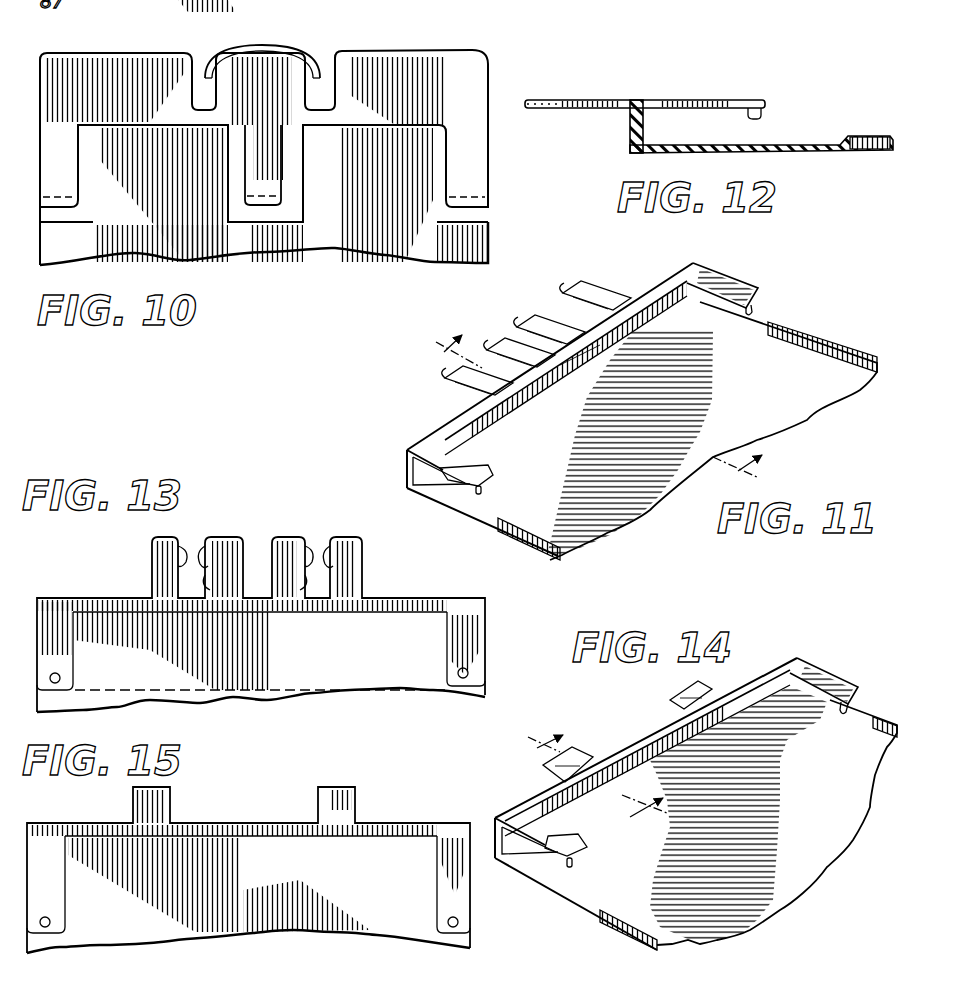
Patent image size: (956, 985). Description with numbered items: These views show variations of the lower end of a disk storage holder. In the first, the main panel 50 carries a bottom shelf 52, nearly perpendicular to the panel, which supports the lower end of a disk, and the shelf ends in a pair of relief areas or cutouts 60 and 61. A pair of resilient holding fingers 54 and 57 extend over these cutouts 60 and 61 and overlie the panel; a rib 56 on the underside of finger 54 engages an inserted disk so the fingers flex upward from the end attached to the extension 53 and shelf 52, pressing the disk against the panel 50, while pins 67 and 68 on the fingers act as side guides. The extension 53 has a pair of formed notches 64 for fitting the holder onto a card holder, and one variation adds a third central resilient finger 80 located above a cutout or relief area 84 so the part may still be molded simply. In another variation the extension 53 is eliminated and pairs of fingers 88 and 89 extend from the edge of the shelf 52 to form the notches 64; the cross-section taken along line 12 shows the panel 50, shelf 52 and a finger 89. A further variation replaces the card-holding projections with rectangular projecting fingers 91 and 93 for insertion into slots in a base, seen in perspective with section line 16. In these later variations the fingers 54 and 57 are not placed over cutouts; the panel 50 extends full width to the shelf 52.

In FIG. 12, the main panel 50 is at (806, 152).
In FIG. 11, the main panel 50 is at (641, 503).
In FIG. 13, the main panel 50 is at (318, 677).
In FIG. 15, the main panel 50 is at (246, 926).
In FIG. 14, the main panel 50 is at (818, 858).
In FIG. 12, the shelf 52 is at (645, 136).
In FIG. 11, the shelf 52 is at (648, 305).
In FIG. 15, the shelf 52 is at (333, 838).
In FIG. 14, the shelf 52 is at (712, 736).
In FIG. 10, the extension 53 is at (444, 72).
In FIG. 10, the resilient holding finger 54 is at (478, 172).
In FIG. 12, the resilient holding finger 54 is at (735, 99).
In FIG. 11, the resilient holding finger 54 is at (737, 286).
In FIG. 13, the resilient holding finger 54 is at (473, 651).
In FIG. 15, the resilient holding finger 54 is at (458, 905).
In FIG. 14, the resilient holding finger 54 is at (835, 688).
In FIG. 12, the cam surface or rib 56 is at (762, 112).
In FIG. 10, the resilient holding finger 57 is at (48, 172).
In FIG. 11, the resilient holding finger 57 is at (482, 462).
In FIG. 13, the resilient holding finger 57 is at (40, 633).
In FIG. 15, the resilient holding finger 57 is at (62, 915).
In FIG. 14, the resilient holding finger 57 is at (588, 844).
In FIG. 10, the relief area or cutout 60 is at (486, 220).
In FIG. 11, the relief area or cutout 60 is at (552, 552).
In FIG. 10, the relief area or cutout 61 is at (72, 214).
In FIG. 11, the relief area or cutout 61 is at (834, 328).
In FIG. 14, the relief area or cutout 61 is at (885, 727).
In FIG. 10, the notches 64 is at (206, 62).
In FIG. 11, the notches 64 is at (572, 372).
In FIG. 13, the notches 64 is at (212, 588).
In FIG. 11, the pin 67 is at (753, 306).
In FIG. 14, the pin 67 is at (850, 706).
In FIG. 11, the pin 68 is at (485, 492).
In FIG. 14, the pin 68 is at (570, 868).
In FIG. 10, the central resilient finger 80 is at (273, 181).
In FIG. 10, the cutout or relief area 84 is at (288, 218).
In FIG. 11, the fingers 88 is at (578, 312).
In FIG. 13, the fingers 88 is at (305, 547).
In FIG. 12, the fingers 89 is at (557, 100).
In FIG. 11, the fingers 89 is at (455, 385).
In FIG. 13, the fingers 89 is at (188, 545).
In FIG. 15, the rectangular projecting finger 91 is at (165, 805).
In FIG. 14, the rectangular projecting finger 91 is at (577, 753).
In FIG. 15, the rectangular projecting finger 93 is at (332, 794).
In FIG. 14, the rectangular projecting finger 93 is at (677, 701).
In FIG. 11, the section line 12— 12 is at (417, 370).
In FIG. 14, the section line 16— 16 is at (503, 771).